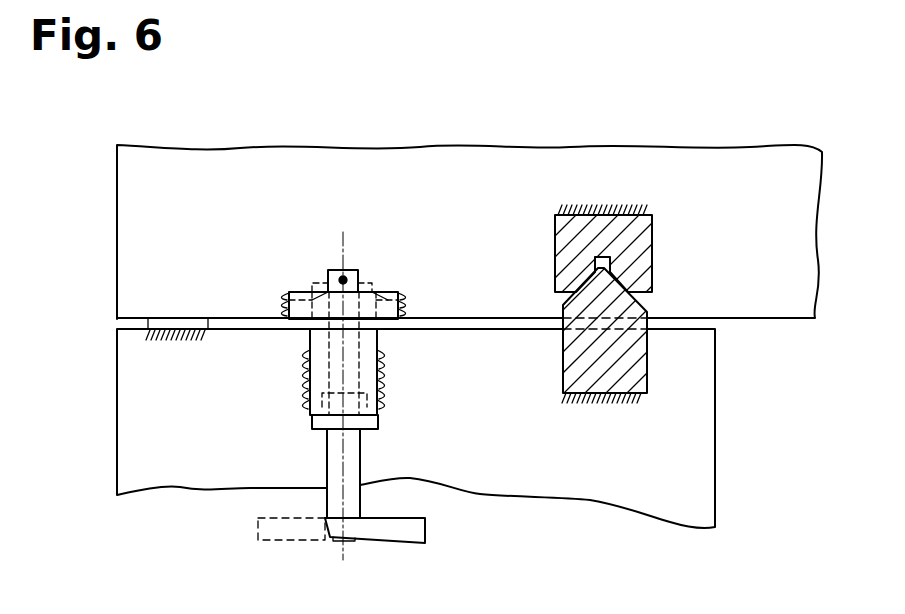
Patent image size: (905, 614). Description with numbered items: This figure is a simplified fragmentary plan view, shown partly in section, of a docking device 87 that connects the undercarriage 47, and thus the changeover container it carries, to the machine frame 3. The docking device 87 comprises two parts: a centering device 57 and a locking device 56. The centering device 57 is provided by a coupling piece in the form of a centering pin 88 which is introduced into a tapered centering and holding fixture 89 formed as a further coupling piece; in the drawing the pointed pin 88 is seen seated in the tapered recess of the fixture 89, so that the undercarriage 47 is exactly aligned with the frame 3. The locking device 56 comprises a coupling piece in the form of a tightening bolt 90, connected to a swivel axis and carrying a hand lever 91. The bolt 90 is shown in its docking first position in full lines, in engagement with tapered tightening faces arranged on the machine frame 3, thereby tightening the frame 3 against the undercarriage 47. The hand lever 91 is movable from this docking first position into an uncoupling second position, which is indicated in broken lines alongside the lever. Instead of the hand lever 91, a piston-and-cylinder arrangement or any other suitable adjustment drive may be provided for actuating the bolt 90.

The machine frame 3 is at (141, 240).
The undercarriage 47 is at (150, 400).
The locking device 56 is at (298, 285).
The centering device 57 is at (571, 198).
The docking device 87 is at (438, 230).
The centering pin 88 is at (628, 362).
The centering and holding fixture 89 is at (624, 267).
The tightening bolt 90 is at (345, 277).
The hand lever 91 is at (415, 528).